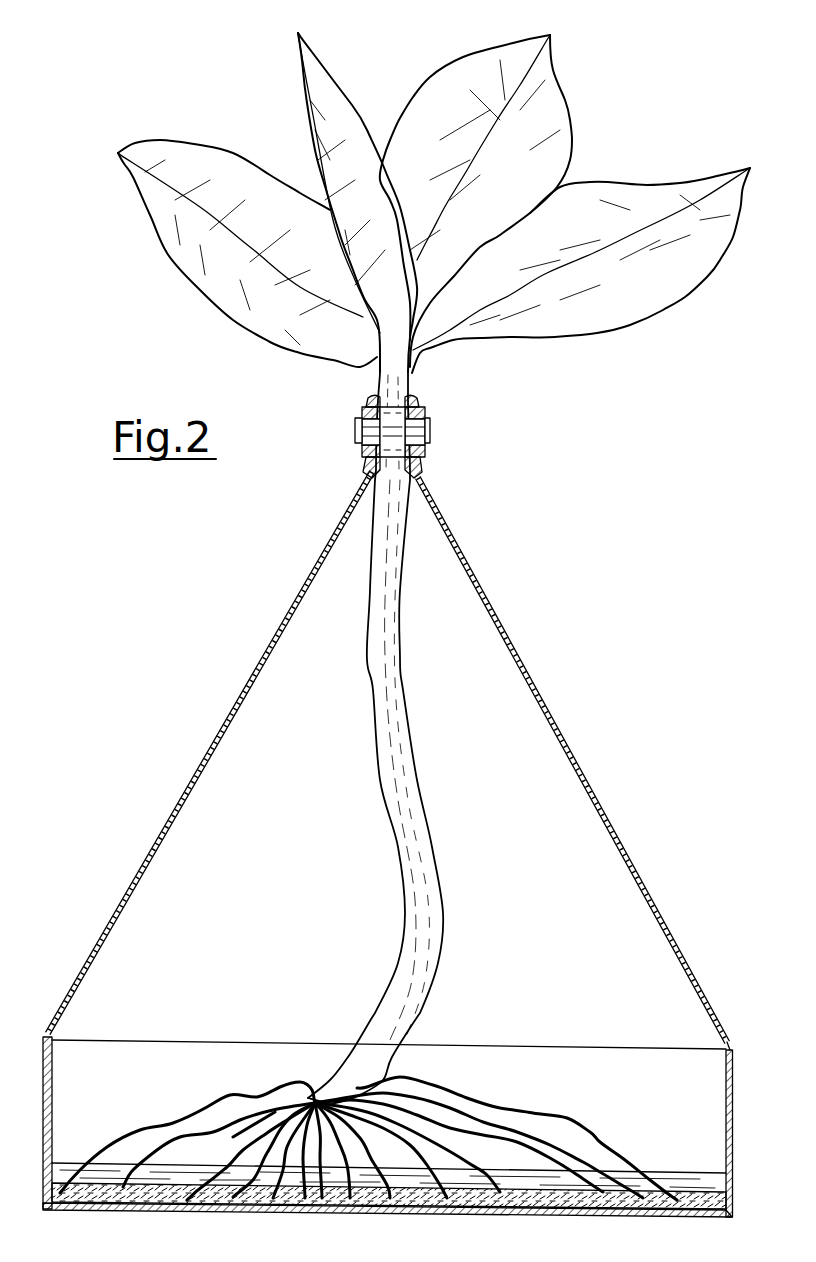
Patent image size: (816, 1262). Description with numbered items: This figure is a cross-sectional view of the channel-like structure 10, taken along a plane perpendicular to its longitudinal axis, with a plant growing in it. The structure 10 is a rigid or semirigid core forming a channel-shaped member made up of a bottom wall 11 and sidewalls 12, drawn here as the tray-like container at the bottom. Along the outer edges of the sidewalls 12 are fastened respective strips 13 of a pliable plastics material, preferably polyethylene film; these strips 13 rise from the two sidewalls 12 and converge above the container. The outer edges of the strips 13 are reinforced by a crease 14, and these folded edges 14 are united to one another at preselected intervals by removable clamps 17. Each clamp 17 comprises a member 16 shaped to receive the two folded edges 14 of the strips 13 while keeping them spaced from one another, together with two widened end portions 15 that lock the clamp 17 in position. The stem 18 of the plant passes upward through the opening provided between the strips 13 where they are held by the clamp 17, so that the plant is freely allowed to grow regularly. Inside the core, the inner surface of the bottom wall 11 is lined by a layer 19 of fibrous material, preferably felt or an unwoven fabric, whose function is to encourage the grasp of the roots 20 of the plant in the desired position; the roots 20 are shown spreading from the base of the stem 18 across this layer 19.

The channel-like structure 10 is at (395, 1127).
The bottom wall 11 is at (50, 1213).
The sidewalls 12 is at (43, 1122).
The strips 13 is at (228, 722).
The crease 14 is at (375, 398).
The widened end portions 15 is at (368, 452).
The member 16 is at (390, 436).
The removable clamps 17 is at (431, 436).
The stem 18 is at (397, 717).
The layer 19 is at (150, 1193).
The roots 20 is at (550, 1143).